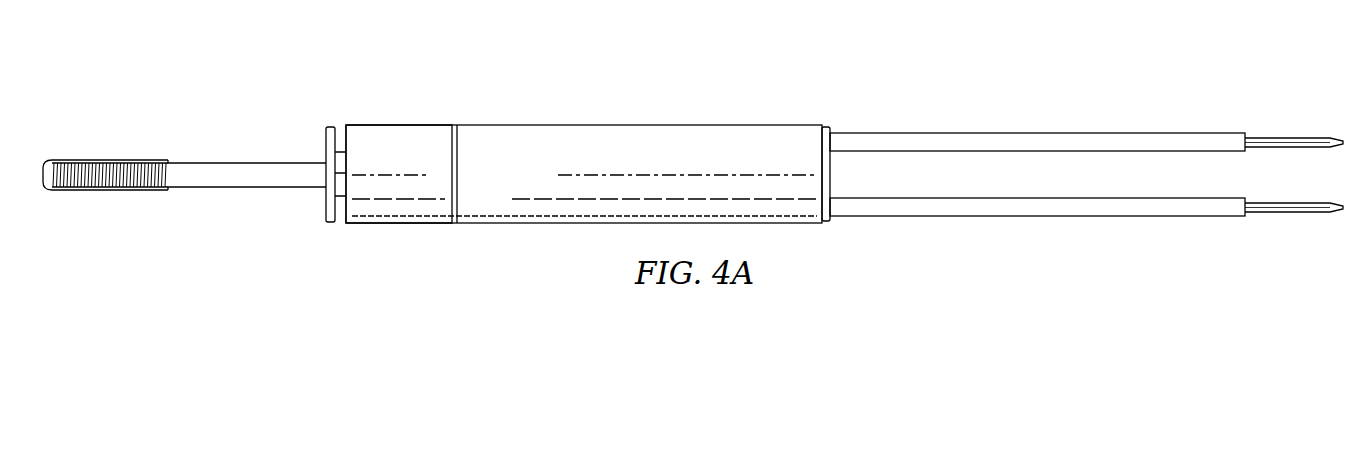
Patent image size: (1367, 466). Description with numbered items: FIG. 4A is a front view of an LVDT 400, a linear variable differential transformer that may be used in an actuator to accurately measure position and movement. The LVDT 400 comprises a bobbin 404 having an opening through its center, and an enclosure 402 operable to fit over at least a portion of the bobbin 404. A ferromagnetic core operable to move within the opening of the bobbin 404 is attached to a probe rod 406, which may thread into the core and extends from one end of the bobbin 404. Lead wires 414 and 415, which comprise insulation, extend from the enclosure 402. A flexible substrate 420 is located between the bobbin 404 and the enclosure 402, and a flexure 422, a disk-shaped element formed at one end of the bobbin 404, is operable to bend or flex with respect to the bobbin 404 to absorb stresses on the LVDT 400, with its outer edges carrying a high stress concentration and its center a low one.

The LVDT 400 is at (276, 72).
The enclosure 402 is at (596, 125).
The bobbin 404 is at (392, 125).
The probe rod 406 is at (215, 163).
The lead wire 414 is at (1280, 138).
The lead wire 415 is at (1272, 212).
The flexible substrate 420 is at (827, 222).
The flexure 422 is at (331, 222).